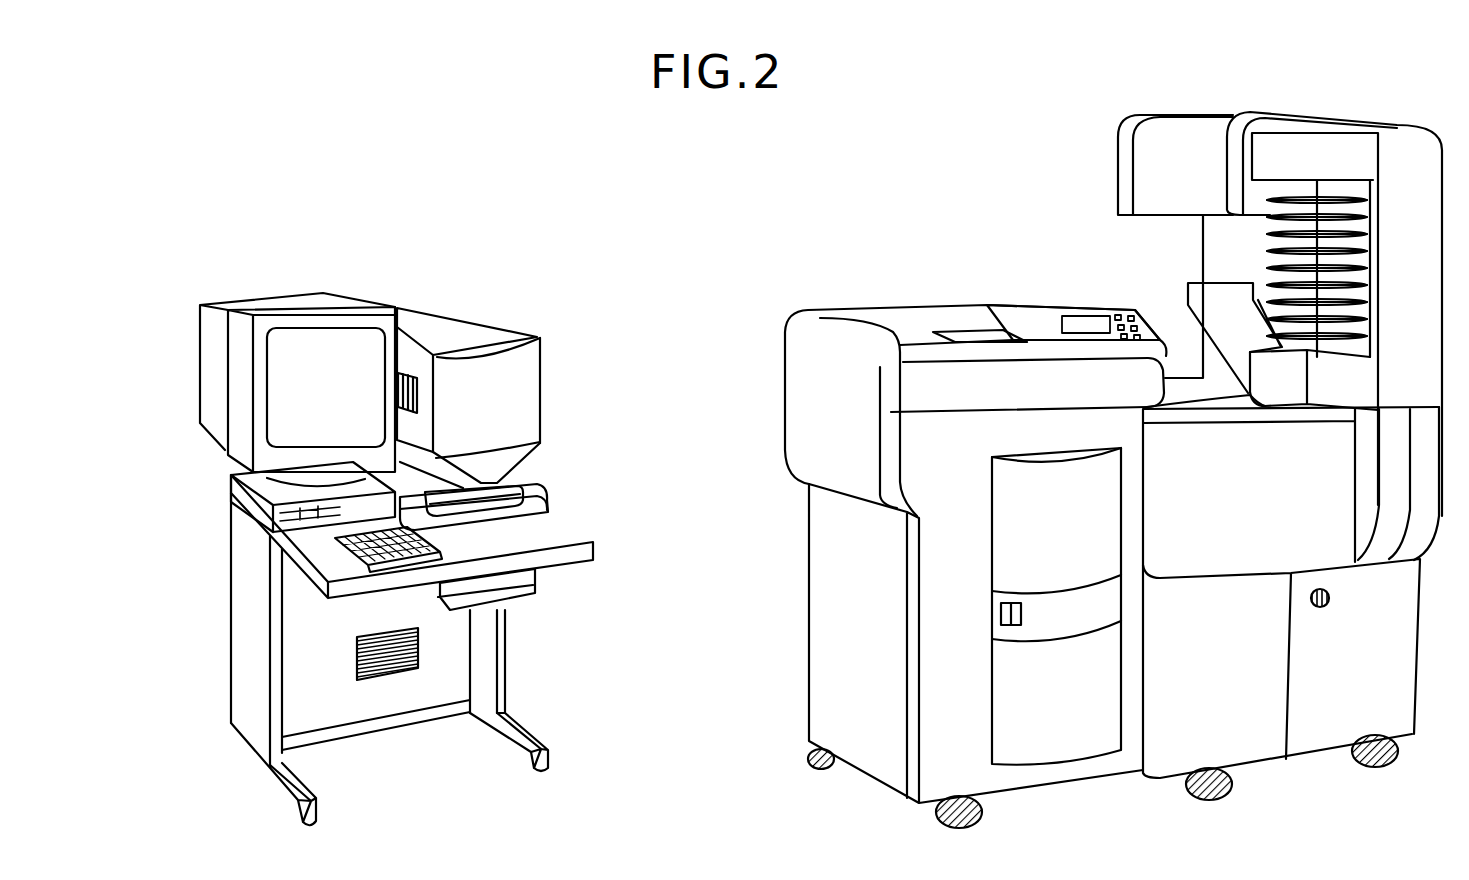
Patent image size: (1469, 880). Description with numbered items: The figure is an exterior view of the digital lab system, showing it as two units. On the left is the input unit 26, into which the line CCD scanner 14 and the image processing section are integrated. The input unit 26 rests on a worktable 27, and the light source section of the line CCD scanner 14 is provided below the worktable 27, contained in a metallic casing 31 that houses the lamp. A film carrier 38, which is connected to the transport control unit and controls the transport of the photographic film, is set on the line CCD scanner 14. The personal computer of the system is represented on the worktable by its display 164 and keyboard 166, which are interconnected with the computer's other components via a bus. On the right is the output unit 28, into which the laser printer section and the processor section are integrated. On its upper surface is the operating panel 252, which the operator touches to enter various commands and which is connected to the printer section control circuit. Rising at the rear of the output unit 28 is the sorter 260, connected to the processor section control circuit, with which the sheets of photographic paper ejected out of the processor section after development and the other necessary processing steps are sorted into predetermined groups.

The input unit 26 is at (337, 229).
The worktable 27 is at (310, 552).
The display 164 is at (237, 365).
The keyboard 166 is at (437, 547).
The line CCD scanner 14 is at (553, 299).
The film carrier 38 is at (520, 505).
The casing 31 is at (525, 586).
The output unit 28 is at (911, 179).
The operating panel 252 is at (1122, 308).
The sorter 260 is at (1242, 245).